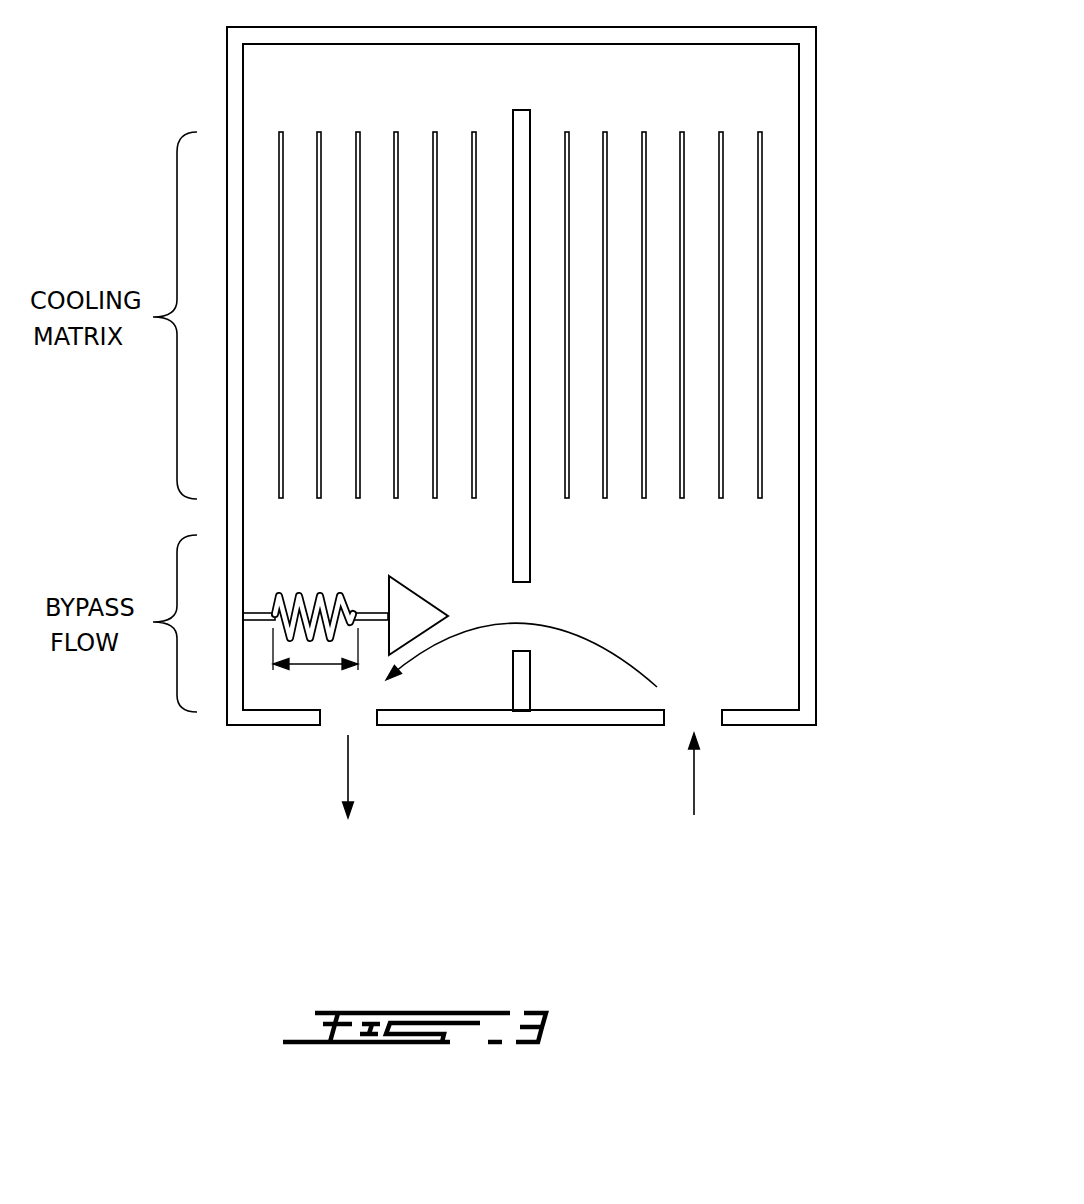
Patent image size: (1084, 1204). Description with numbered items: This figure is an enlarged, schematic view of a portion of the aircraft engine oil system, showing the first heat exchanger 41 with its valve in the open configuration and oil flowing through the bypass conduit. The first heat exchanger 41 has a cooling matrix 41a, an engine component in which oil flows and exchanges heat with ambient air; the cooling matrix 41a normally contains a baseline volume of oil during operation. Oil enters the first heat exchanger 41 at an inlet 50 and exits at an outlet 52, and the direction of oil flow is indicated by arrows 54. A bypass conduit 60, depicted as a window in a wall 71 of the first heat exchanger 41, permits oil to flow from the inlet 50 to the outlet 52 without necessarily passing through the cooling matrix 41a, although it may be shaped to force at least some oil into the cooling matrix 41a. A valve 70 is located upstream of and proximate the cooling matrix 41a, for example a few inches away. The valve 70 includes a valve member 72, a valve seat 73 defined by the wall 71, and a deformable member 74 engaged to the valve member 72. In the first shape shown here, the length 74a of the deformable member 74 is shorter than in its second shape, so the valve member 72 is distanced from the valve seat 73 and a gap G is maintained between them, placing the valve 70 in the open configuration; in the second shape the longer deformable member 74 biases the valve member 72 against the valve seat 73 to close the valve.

The first heat exchanger 41 is at (868, 204).
The cooling matrix 41a is at (768, 173).
The inlet 50 is at (709, 732).
The outlet 52 is at (335, 735).
The arrows 54 is at (624, 653).
The bypass conduit 60 is at (532, 610).
The valve 70 is at (294, 654).
The wall 71 is at (530, 517).
The valve member 72 is at (406, 600).
The valve seat 73 is at (503, 581).
The deformable member 74 is at (303, 593).
The length 74a is at (315, 665).
The gap G is at (485, 652).